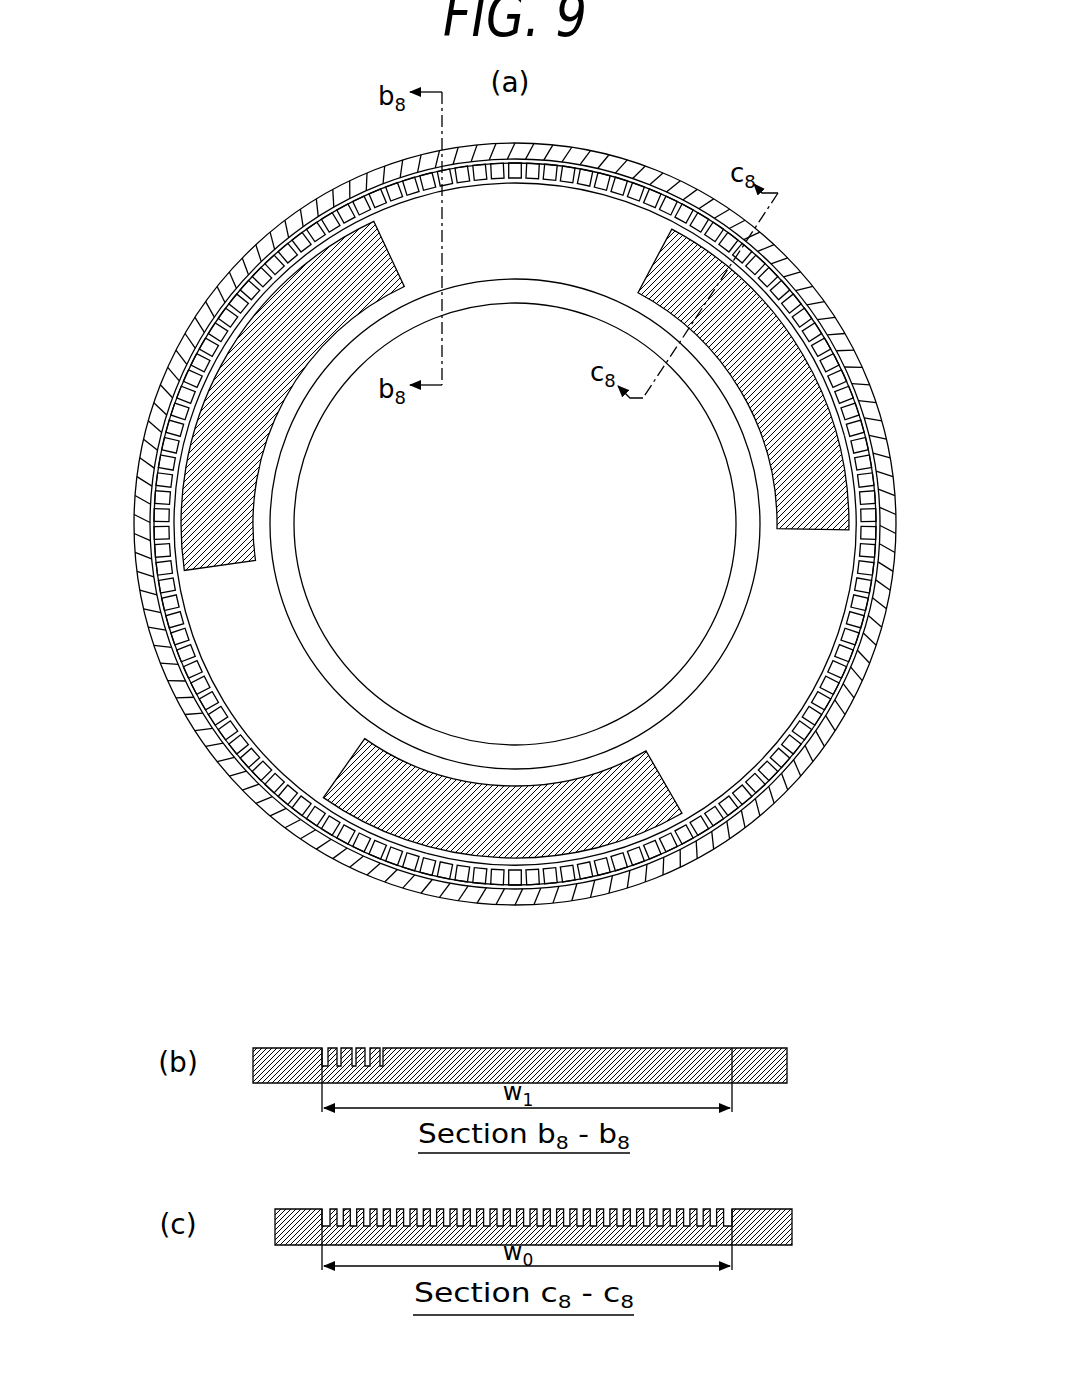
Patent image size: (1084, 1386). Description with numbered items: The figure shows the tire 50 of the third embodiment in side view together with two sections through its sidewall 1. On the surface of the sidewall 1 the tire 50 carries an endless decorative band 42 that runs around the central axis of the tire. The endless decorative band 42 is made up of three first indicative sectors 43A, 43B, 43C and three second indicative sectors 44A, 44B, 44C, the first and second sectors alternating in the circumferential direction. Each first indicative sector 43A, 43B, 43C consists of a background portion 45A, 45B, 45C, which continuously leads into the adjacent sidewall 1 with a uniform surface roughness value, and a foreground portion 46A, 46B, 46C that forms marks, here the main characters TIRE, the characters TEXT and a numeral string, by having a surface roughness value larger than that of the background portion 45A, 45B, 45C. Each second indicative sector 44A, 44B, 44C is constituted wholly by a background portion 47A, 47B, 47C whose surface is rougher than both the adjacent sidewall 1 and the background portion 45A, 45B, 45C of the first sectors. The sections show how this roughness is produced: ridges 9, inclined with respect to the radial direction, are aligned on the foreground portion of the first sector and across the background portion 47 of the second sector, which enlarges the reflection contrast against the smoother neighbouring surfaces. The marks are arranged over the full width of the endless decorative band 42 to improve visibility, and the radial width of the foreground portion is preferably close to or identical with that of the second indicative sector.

The sidewall 1 is at (330, 240).
The ridges 9 is at (357, 1048).
The endless decorative band 42 is at (515, 565).
The first indicative sector 43A is at (563, 183).
The first indicative sector 43B is at (802, 693).
The first indicative sector 43C is at (223, 710).
The second indicative sector 44A is at (779, 379).
The second indicative sector 44B is at (516, 849).
The second indicative sector 44C is at (257, 392).
The background portion 45A is at (587, 215).
The background portion 45B is at (825, 615).
The background portion 45C is at (270, 737).
The foreground portion 46A is at (632, 220).
The foreground portion 46B is at (827, 543).
The foreground portion 46C is at (317, 777).
The background portion 47 is at (425, 1209).
The background portion 47A is at (753, 343).
The background portion 47B is at (620, 820).
The background portion 47C is at (233, 413).
The tire 50 is at (787, 228).